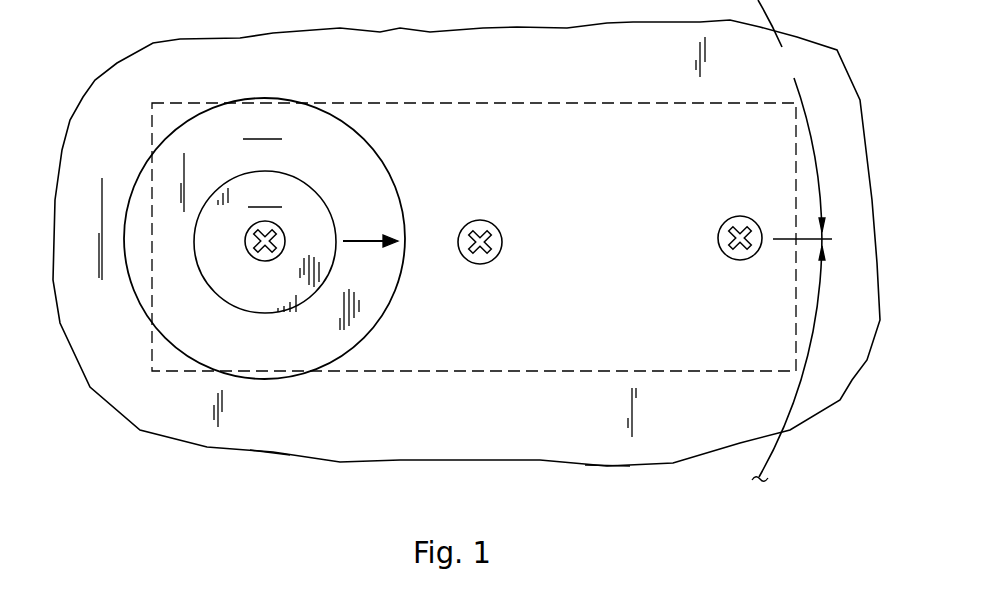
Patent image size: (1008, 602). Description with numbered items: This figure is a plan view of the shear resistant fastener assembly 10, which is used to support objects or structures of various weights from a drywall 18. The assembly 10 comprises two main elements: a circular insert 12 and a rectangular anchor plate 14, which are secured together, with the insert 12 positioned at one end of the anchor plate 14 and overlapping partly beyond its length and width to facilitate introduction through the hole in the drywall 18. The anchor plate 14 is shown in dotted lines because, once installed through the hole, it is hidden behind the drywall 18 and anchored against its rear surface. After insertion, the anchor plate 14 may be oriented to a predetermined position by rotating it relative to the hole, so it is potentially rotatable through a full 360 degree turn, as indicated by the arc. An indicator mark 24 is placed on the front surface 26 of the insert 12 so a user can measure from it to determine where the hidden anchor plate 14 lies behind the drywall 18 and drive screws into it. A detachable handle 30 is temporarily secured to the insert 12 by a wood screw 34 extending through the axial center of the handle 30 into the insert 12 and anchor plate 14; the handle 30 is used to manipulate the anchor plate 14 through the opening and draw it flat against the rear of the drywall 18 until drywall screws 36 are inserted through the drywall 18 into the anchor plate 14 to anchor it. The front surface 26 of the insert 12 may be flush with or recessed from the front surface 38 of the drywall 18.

The shear resistant fastener assembly 10 is at (173, 457).
The insert 12 is at (390, 303).
The anchor plate 14 is at (407, 372).
The drywall 18 is at (607, 466).
The indicator mark 24 is at (361, 238).
The front surface 26 is at (262, 124).
The detachable handle 30 is at (265, 242).
The wood screw 34 is at (246, 246).
The drywall screws 36 is at (486, 266).
The front surface 38 is at (273, 437).
The 360 degree rotation arc 360 is at (792, 240).